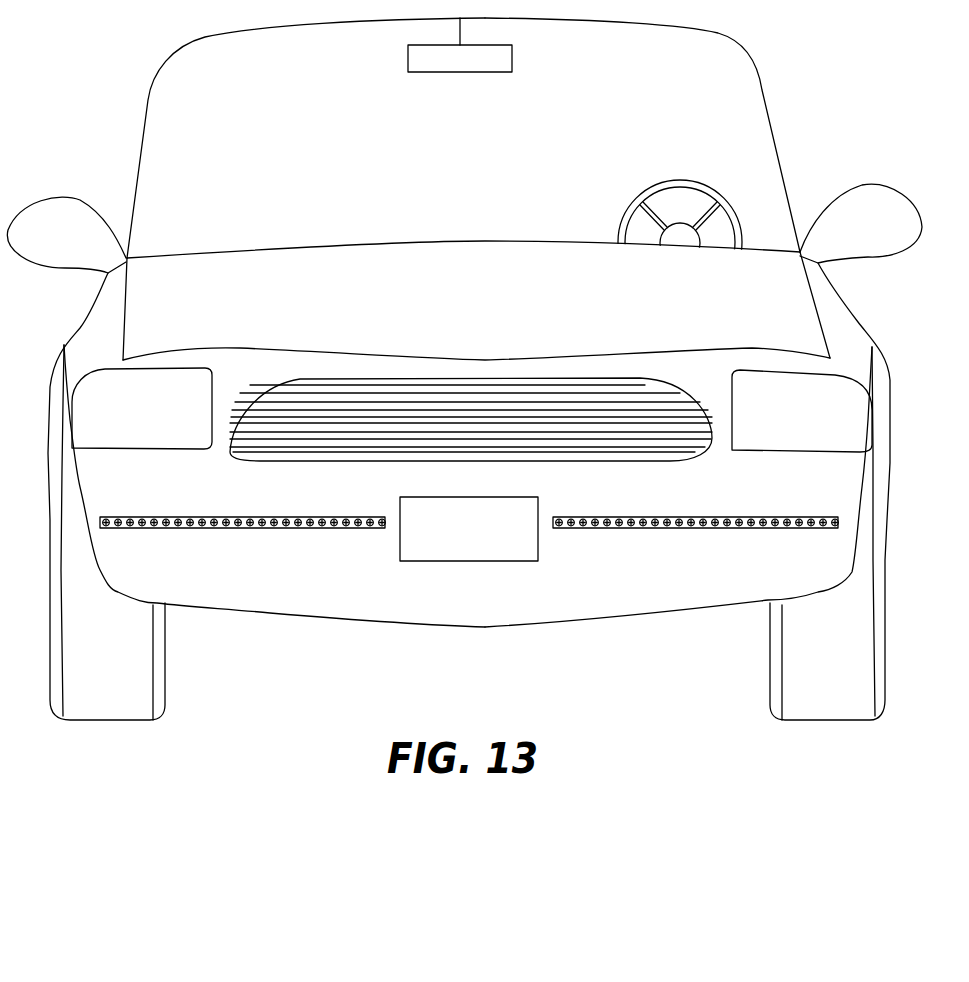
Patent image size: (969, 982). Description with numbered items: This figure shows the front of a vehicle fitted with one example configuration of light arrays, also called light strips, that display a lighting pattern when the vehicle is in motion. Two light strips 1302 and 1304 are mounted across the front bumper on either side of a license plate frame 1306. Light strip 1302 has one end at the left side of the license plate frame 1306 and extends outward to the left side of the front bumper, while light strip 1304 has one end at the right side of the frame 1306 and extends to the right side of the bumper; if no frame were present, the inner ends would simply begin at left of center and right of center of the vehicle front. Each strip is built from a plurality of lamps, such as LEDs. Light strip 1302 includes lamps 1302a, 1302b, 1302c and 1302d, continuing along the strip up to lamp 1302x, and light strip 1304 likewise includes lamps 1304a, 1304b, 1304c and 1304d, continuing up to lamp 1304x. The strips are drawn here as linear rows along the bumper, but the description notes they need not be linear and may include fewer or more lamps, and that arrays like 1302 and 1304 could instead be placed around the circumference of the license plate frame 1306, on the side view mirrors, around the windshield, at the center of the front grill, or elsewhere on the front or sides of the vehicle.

The light strip 1302 is at (200, 545).
The lamp 1302a is at (375, 530).
The lamp 1302b is at (367, 517).
The lamp 1302c is at (350, 530).
The lamp 1302d is at (333, 517).
The lamp 1302x is at (103, 517).
The light strip 1304 is at (736, 548).
The lamp 1304a is at (563, 530).
The lamp 1304b is at (592, 495).
The lamp 1304c is at (587, 530).
The lamp 1304d is at (598, 517).
The lamp 1304x is at (835, 517).
The license plate frame 1306 is at (498, 540).